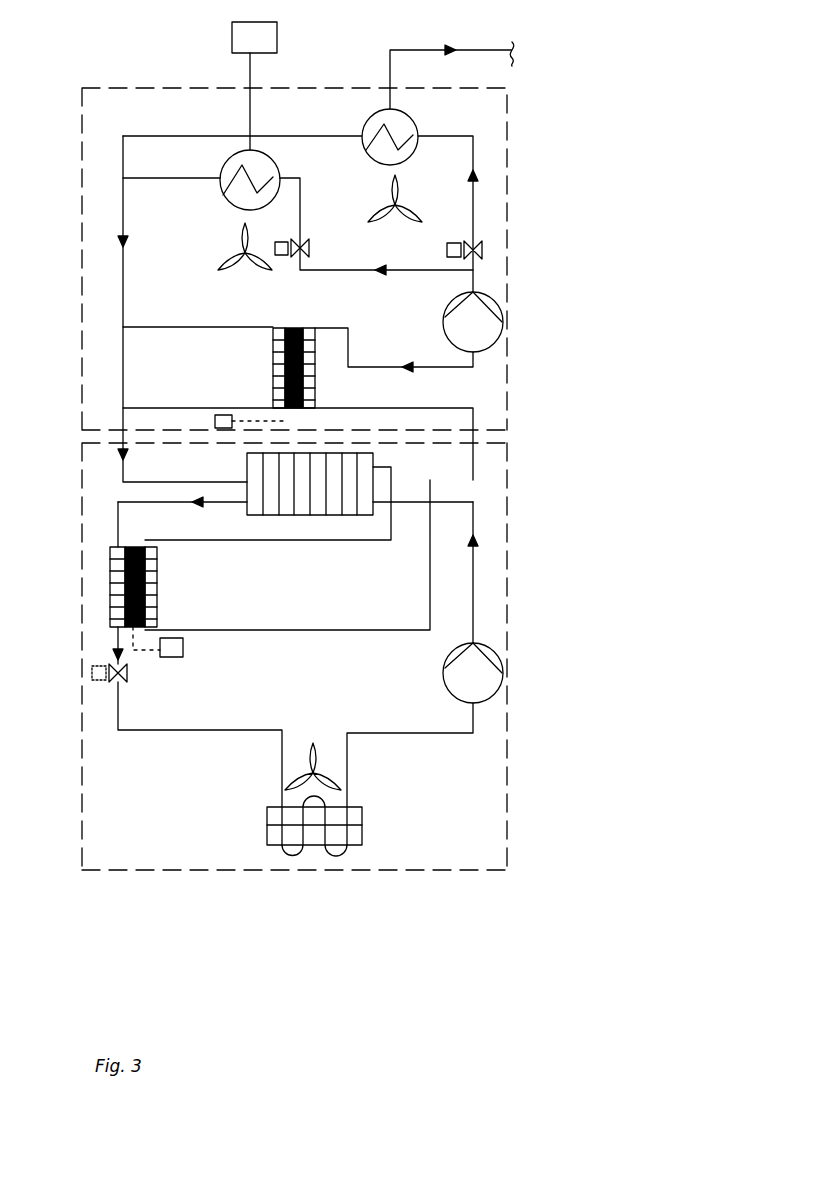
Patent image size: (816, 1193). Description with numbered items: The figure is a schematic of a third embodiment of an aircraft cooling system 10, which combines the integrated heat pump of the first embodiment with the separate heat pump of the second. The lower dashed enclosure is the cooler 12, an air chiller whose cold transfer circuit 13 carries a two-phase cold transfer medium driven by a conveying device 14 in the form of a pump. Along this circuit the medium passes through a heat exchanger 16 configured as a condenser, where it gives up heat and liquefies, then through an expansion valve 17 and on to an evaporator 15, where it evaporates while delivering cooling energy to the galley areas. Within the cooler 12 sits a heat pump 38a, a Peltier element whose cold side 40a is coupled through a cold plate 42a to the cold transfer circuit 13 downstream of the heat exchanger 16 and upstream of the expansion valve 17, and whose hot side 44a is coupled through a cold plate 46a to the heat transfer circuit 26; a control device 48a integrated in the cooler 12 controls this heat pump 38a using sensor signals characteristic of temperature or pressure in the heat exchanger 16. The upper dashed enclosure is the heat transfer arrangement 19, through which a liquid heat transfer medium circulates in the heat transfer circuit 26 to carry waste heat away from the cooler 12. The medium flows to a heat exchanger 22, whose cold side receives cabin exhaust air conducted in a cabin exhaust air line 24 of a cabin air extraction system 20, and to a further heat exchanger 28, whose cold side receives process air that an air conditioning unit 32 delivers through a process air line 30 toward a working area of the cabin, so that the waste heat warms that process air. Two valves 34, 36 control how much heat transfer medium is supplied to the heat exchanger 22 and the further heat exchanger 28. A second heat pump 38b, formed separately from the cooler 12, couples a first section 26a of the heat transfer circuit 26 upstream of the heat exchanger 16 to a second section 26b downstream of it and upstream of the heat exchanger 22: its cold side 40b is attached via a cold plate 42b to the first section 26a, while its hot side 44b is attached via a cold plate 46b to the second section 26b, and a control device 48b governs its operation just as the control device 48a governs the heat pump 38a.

The aircraft cooling system 10 is at (563, 128).
The cooler 12 is at (507, 565).
The cold transfer circuit 13 is at (473, 612).
The conveying device 14 is at (503, 680).
The evaporator 15 is at (375, 795).
The heat exchanger 16 is at (373, 515).
The expansion valve 17 is at (127, 678).
The heat transfer arrangement 19 is at (473, 152).
The cabin air extraction system 20 is at (488, 73).
The heat exchanger 22 is at (364, 150).
The cabin exhaust air line 24 is at (415, 50).
The heat transfer circuit 26 is at (473, 212).
The first section of the heat transfer circuit 26a is at (123, 290).
The second section of the heat transfer circuit 26b is at (473, 272).
The further heat exchanger 28 is at (232, 192).
The process air line 30 is at (250, 104).
The air conditioning unit 32 is at (277, 38).
The valve 34 is at (482, 250).
The valve 36 is at (309, 250).
The heat pump 38a is at (148, 564).
The heat pump 38b is at (281, 350).
The cold side 40a is at (157, 548).
The cold side 40b is at (285, 328).
The cold plate 42a is at (110, 598).
The cold plate 42b is at (273, 365).
The hot side 44a is at (157, 620).
The hot side 44b is at (315, 388).
The cold plate 46a is at (157, 603).
The cold plate 46b is at (315, 352).
The control device 48a is at (183, 648).
The control device 48b is at (215, 421).